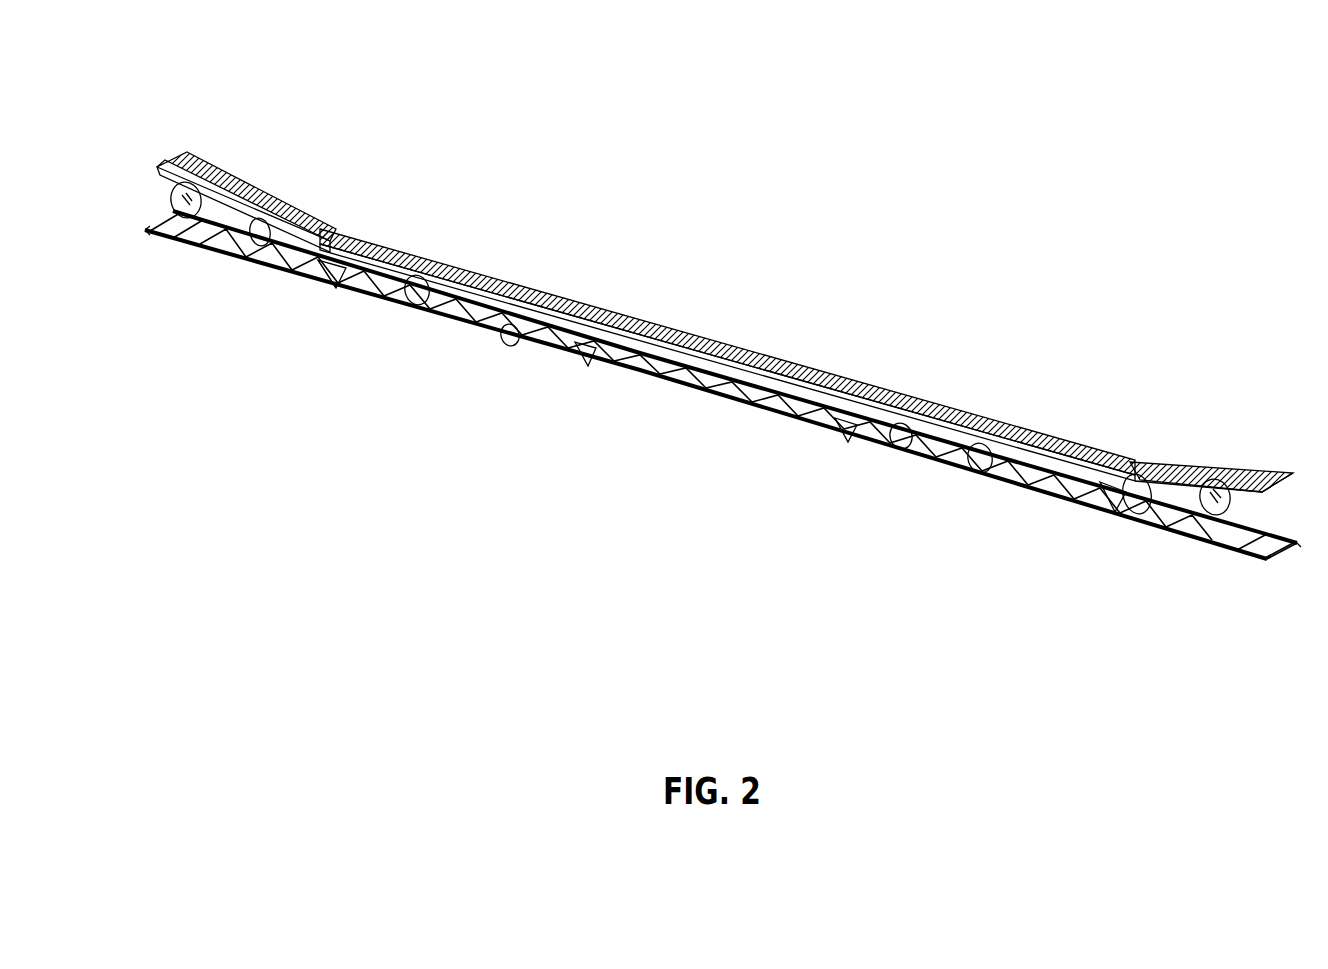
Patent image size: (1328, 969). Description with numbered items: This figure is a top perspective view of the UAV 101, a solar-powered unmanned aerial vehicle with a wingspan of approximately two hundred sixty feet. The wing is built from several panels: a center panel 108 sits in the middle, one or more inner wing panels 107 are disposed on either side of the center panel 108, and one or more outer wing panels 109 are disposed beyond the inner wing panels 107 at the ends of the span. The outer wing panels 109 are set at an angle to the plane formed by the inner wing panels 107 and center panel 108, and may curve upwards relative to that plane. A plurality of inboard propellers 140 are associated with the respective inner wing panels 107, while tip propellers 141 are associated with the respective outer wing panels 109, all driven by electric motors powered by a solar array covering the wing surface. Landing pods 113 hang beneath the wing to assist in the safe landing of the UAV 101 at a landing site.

The UAV 101 is at (185, 75).
The inner wing panels 107 is at (400, 251).
The center panel 108 is at (790, 384).
The outer wing panels 109 is at (215, 166).
The landing pods 113 is at (327, 284).
The inboard propellers 140 is at (410, 302).
The tip propellers 141 is at (183, 220).